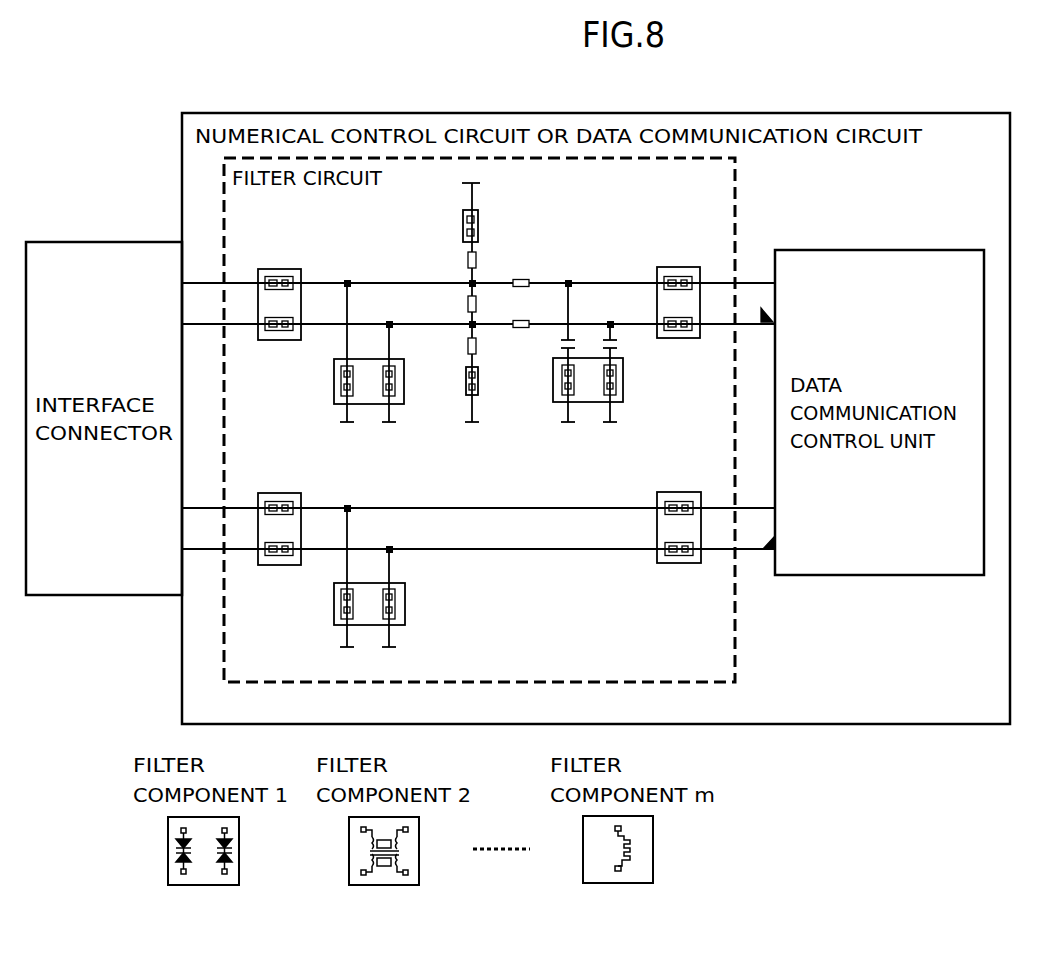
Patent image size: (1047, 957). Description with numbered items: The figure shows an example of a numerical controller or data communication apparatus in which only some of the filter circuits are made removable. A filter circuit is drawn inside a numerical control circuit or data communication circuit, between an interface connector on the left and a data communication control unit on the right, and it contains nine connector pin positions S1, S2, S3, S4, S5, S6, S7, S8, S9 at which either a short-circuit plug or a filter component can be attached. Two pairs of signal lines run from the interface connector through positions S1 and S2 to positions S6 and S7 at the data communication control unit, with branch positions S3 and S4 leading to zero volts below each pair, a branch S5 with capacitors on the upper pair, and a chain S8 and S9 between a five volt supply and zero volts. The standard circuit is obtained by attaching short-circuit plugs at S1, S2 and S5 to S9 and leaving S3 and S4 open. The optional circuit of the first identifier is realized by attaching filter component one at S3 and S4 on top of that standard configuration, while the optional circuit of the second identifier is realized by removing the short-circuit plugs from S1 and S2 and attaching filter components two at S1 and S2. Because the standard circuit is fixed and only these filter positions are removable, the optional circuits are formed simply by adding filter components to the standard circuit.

The connector pin position S1 is at (279, 289).
The connector pin position S2 is at (279, 512).
The connector pin position S3 is at (350, 363).
The connector pin position S4 is at (351, 588).
The connector pin position S5 is at (567, 363).
The connector pin position S6 is at (678, 288).
The connector pin position S7 is at (679, 510).
The connector pin position S8 is at (452, 226).
The connector pin position S9 is at (454, 363).